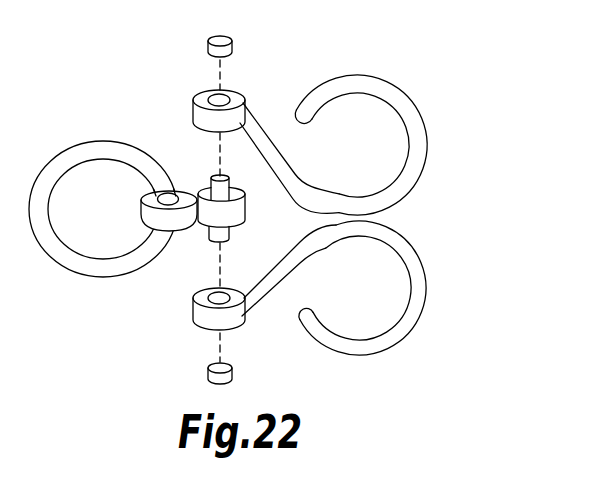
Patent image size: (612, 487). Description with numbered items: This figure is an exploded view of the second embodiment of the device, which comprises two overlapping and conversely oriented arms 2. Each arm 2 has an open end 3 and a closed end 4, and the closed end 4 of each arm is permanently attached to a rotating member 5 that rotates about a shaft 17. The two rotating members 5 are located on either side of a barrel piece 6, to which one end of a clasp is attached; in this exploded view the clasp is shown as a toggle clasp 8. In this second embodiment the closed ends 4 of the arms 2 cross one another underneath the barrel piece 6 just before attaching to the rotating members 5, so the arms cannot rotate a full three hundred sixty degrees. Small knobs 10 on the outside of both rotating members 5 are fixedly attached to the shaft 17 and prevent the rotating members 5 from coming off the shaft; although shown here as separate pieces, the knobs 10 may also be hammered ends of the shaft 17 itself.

The arm 2 is at (400, 94).
The open end 3 is at (311, 121).
The closed end 4 is at (260, 126).
The rotating member 5 is at (198, 113).
The barrel piece 6 is at (243, 220).
The toggle clasp 8 is at (53, 147).
The knob 10 is at (207, 54).
The shaft 17 is at (211, 176).